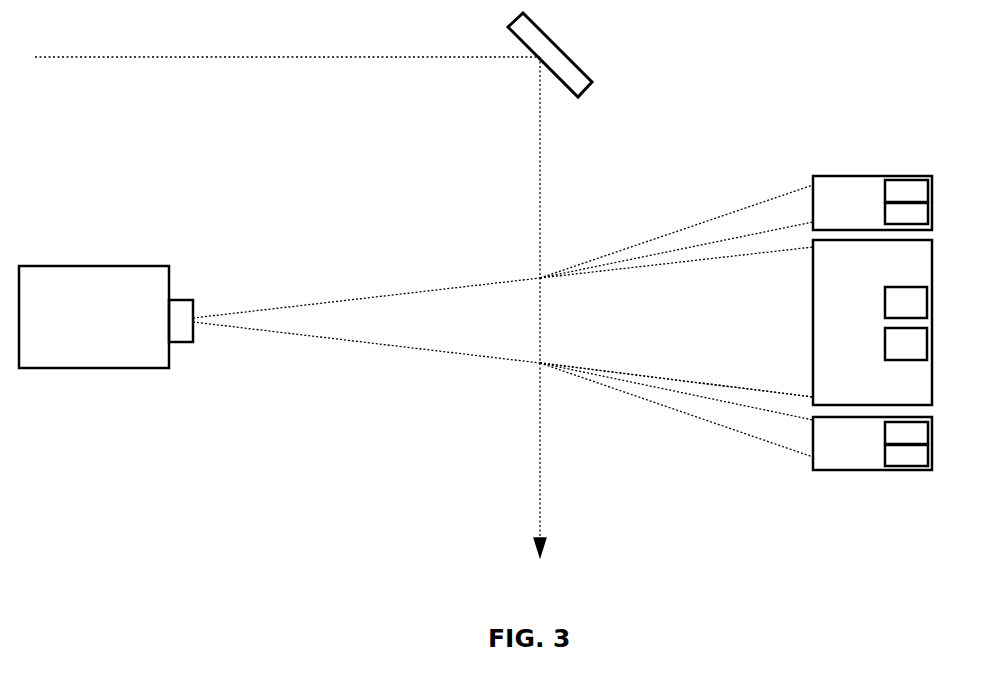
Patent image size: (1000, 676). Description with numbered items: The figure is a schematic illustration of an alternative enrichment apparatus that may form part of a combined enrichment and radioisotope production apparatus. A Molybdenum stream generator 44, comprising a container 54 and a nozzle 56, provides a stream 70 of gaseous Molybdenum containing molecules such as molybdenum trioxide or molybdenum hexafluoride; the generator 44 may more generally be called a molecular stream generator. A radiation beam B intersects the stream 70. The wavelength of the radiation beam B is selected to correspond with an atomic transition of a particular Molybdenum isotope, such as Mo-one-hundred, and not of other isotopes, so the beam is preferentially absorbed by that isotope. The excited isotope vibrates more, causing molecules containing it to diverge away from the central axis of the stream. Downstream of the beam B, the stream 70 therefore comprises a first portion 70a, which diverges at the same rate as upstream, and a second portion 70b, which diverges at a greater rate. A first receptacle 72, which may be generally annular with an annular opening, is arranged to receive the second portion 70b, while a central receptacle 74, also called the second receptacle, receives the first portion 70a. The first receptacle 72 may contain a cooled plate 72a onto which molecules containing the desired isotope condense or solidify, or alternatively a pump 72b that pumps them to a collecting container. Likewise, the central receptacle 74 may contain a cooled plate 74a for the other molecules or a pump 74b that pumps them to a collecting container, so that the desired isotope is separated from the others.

The Molybdenum stream generator 44 is at (76, 240).
The container 54 is at (94, 317).
The nozzle 56 is at (185, 333).
The stream 70 is at (437, 320).
The first portion 70a is at (627, 335).
The second portion 70b is at (722, 227).
The first receptacle 72 is at (872, 323).
The cooled plate 72a is at (906, 323).
The pump 72b is at (906, 323).
The central receptacle 74 is at (872, 322).
The cooled plate 74a is at (906, 302).
The pump 74b is at (906, 344).
The radiation beam B is at (540, 156).